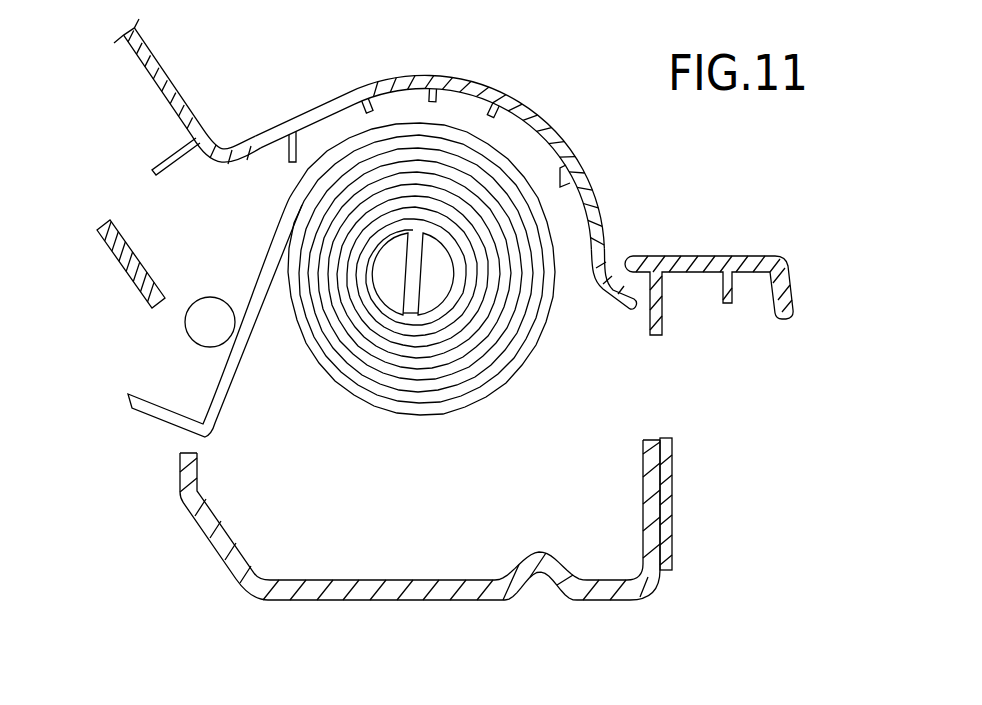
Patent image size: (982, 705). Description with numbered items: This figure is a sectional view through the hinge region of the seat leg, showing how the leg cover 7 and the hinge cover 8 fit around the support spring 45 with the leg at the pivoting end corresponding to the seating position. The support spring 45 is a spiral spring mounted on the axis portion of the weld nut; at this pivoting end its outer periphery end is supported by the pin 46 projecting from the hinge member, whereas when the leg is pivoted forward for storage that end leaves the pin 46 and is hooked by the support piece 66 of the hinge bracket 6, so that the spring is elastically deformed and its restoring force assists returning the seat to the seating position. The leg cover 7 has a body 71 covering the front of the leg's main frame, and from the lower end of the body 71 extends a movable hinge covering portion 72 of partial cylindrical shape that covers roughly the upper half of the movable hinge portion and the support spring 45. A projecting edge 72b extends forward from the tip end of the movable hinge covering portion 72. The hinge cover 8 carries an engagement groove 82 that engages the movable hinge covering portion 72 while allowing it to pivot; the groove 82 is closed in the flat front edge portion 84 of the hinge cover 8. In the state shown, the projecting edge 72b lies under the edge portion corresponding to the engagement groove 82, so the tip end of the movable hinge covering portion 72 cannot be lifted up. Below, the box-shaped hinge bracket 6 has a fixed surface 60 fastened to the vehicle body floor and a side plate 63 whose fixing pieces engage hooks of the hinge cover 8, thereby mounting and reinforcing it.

The leg cover 7 is at (224, 87).
The body 71 is at (188, 62).
The movable hinge covering portion 72 is at (497, 112).
The projecting edge 72b is at (617, 307).
The engagement groove 82 is at (622, 260).
The hinge cover 8 is at (735, 245).
The front edge portion 84 is at (722, 253).
The support piece 66 is at (118, 263).
The pin 46 is at (207, 297).
The support spring 45 is at (403, 420).
The hinge bracket 6 is at (425, 542).
The fixed surface 60 is at (453, 600).
The side plate 63 is at (672, 478).